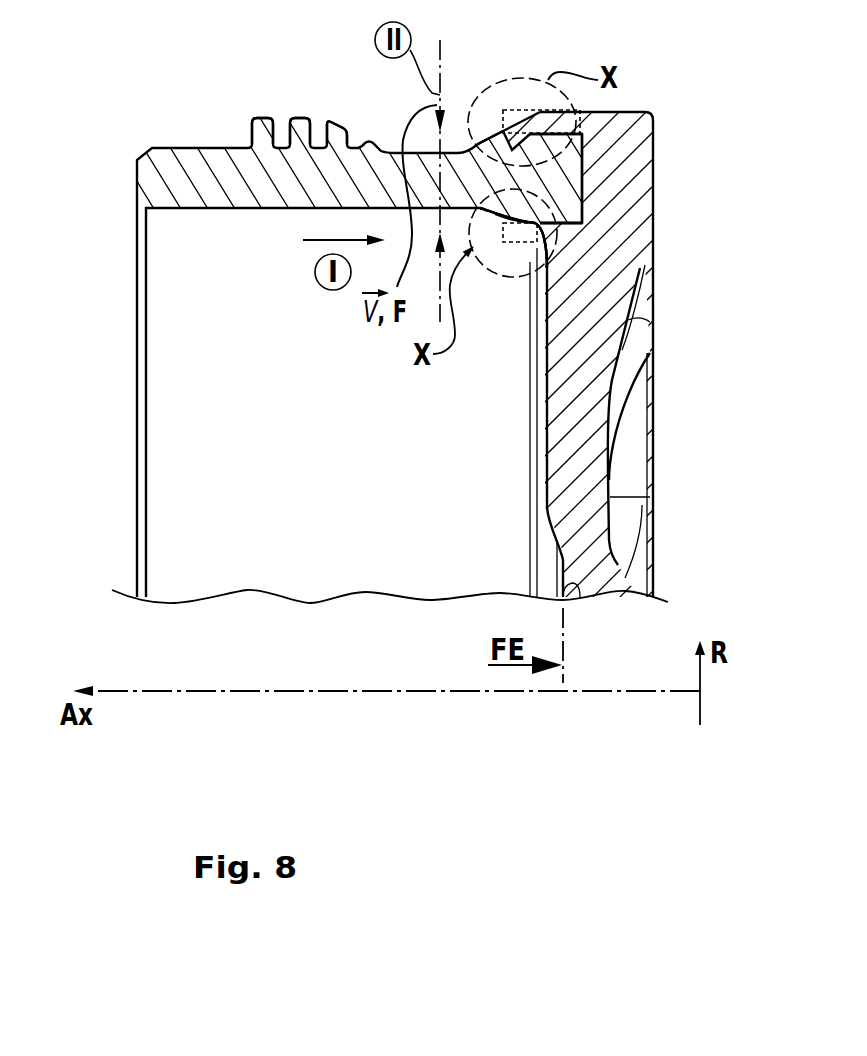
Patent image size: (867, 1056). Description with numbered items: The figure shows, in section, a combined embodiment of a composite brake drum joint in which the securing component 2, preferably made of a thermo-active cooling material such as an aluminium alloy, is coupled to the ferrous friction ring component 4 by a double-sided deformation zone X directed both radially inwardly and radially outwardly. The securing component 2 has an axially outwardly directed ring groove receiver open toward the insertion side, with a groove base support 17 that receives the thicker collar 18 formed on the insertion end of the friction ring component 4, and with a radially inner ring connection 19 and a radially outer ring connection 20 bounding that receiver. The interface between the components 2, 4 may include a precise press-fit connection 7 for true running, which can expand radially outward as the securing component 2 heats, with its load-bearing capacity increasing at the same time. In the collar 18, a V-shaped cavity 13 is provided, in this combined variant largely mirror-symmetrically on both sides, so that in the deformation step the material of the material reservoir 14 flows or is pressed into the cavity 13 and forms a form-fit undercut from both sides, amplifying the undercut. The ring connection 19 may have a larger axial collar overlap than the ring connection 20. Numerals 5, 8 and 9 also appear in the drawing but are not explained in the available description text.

The securing component 2 is at (582, 387).
The friction ring component 4 is at (391, 342).
The ribs 5 is at (237, 207).
The press-fit connection 7 is at (560, 236).
The groove 8 is at (556, 224).
The recess 9 is at (595, 180).
The cavity 13 is at (568, 188).
The material reservoir 14 is at (517, 228).
The groove base support 17 is at (575, 178).
The collar 18 is at (515, 230).
The radially inner ring connection 19 is at (513, 235).
The radially outer ring connection 20 is at (517, 130).